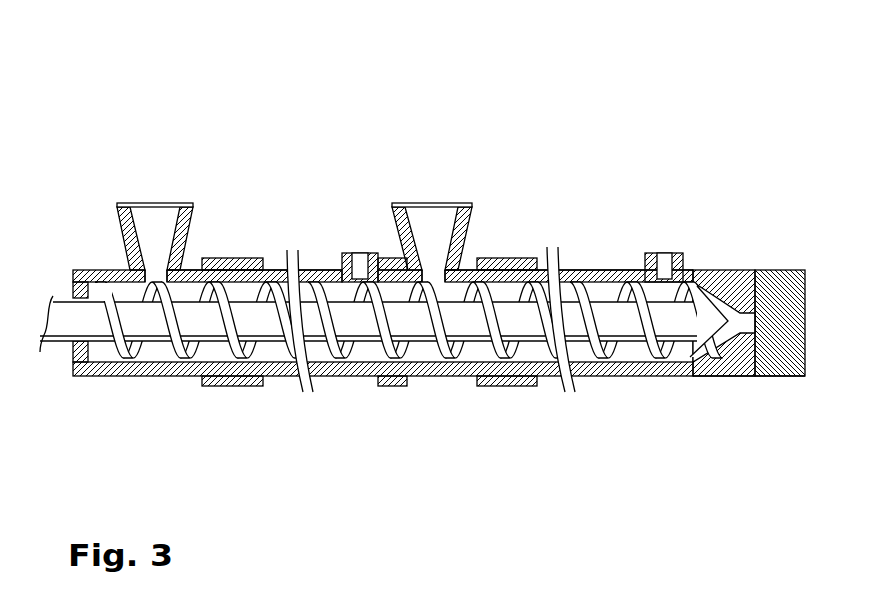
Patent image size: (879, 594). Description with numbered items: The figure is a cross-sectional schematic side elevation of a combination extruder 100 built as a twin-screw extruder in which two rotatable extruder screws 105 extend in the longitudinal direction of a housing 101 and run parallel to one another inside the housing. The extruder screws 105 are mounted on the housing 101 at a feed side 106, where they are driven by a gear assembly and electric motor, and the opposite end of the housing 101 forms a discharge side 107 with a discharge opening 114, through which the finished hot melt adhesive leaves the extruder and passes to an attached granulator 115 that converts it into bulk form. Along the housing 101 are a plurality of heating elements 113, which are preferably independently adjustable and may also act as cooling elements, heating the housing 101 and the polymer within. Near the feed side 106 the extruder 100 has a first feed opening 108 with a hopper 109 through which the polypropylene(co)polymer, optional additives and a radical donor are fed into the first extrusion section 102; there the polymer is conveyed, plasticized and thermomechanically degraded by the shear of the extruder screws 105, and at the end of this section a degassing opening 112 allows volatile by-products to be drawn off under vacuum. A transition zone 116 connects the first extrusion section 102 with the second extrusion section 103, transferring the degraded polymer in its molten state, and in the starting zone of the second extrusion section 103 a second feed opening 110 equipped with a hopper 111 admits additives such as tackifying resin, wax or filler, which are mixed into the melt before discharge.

The combination extruder 100 is at (420, 257).
The housing 101 is at (373, 290).
The first extrusion section 102 is at (259, 200).
The second extrusion section 103 is at (569, 202).
The extruder screws 105 is at (384, 368).
The feed side 106 is at (53, 388).
The discharge side 107 is at (749, 434).
The first feed opening 108 is at (165, 196).
The hopper 109 is at (136, 173).
The second feed opening 110 is at (439, 197).
The hopper 111 is at (472, 182).
The degassing opening 112 is at (498, 235).
The heating elements 113 is at (384, 321).
The discharge opening 114 is at (724, 283).
The granulator 115 is at (789, 284).
The transition zone 116 is at (344, 378).